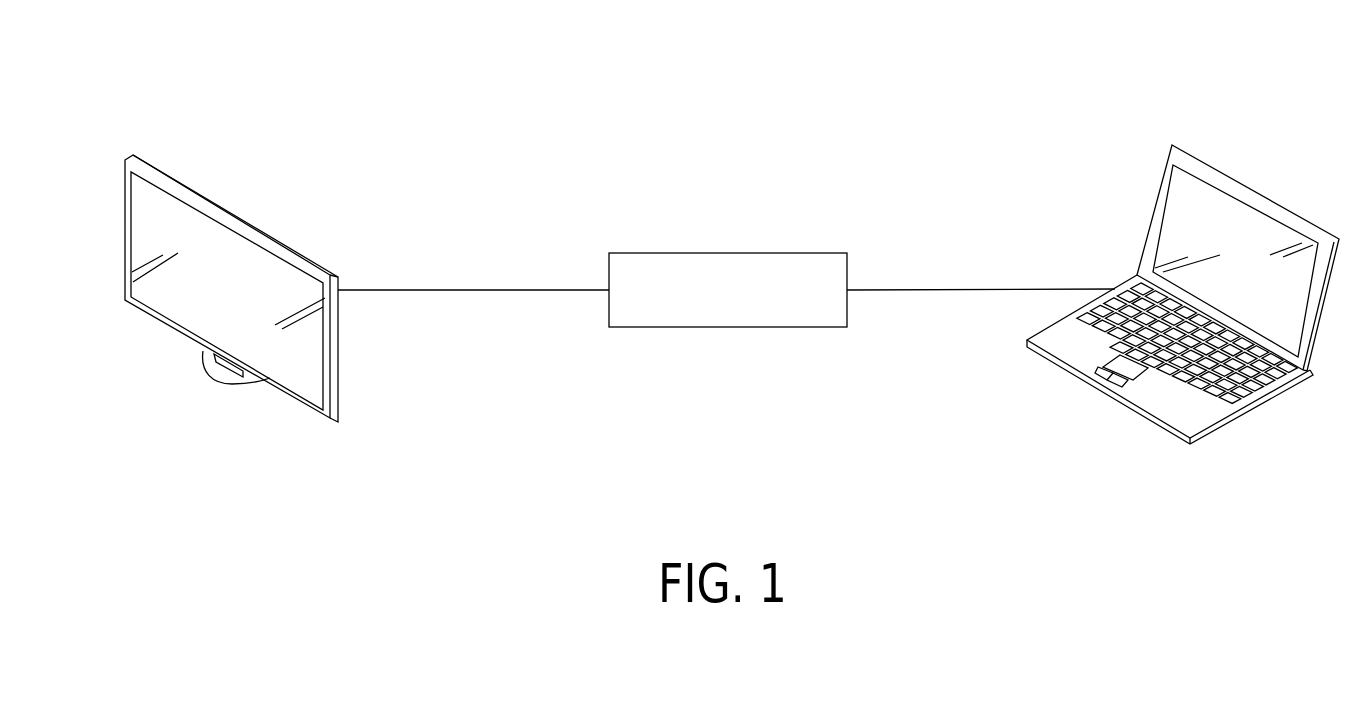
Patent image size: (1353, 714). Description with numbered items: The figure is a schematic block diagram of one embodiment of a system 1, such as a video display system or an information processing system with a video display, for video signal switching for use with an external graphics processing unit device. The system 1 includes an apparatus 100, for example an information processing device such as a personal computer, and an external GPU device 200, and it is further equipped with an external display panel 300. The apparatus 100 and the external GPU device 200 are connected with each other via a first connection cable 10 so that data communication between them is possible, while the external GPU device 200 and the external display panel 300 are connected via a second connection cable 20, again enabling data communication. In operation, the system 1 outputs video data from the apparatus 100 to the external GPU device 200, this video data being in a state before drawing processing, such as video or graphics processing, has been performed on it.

The system 1 is at (851, 112).
The apparatus 100 is at (1277, 203).
The external GPU device 200 is at (775, 253).
The external display panel 300 is at (260, 232).
The first connection cable 10 is at (940, 284).
The second connection cable 20 is at (430, 284).